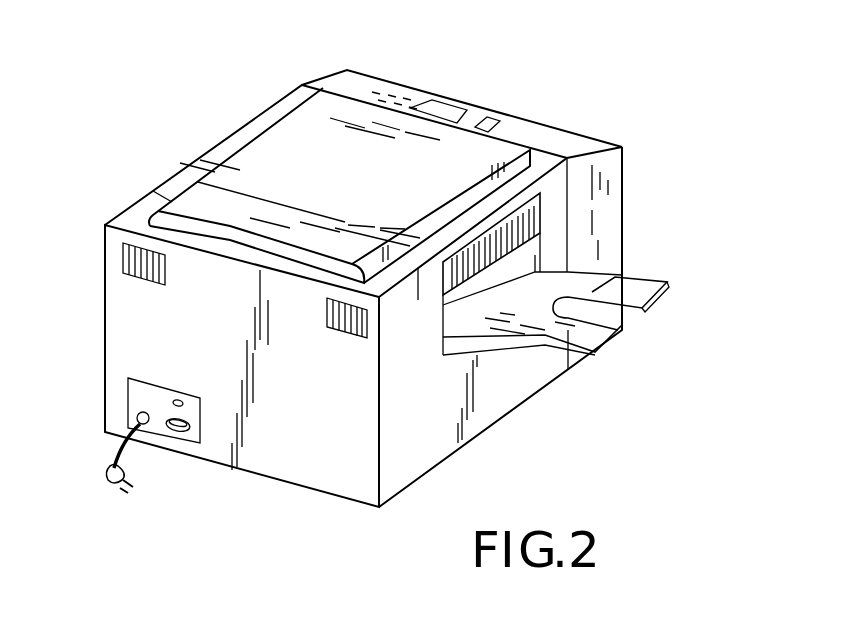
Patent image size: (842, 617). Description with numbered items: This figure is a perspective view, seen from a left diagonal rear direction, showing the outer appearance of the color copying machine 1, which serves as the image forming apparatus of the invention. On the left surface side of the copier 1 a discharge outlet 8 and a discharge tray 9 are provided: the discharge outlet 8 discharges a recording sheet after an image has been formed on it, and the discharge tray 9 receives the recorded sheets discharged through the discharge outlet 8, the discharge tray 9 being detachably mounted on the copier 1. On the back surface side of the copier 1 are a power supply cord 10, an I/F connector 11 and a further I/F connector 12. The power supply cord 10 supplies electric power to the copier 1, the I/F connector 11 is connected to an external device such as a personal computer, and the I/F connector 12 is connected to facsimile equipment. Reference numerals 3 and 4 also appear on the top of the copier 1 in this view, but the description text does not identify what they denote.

The color copying machine 1 is at (528, 82).
The platen / original placement surface 3 is at (370, 183).
The cover (lid) 4 is at (334, 83).
The discharge outlet 8 is at (527, 263).
The discharge tray 9 is at (667, 286).
The power supply cord 10 is at (114, 460).
The I/F connector 11 is at (178, 433).
The I/F connector 12 is at (180, 400).